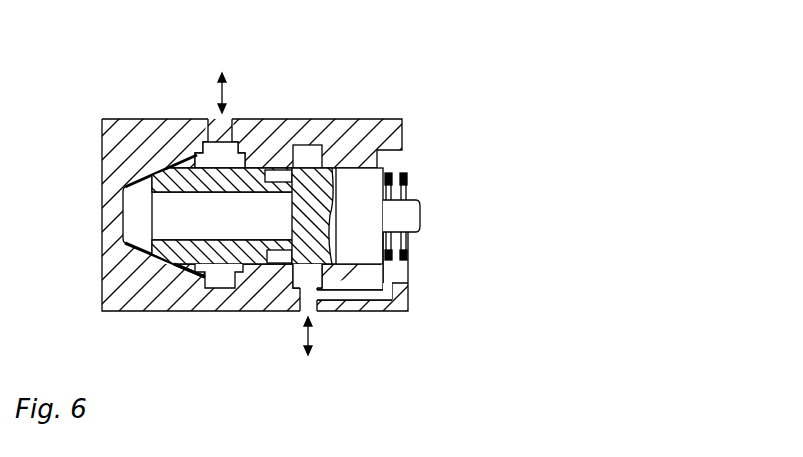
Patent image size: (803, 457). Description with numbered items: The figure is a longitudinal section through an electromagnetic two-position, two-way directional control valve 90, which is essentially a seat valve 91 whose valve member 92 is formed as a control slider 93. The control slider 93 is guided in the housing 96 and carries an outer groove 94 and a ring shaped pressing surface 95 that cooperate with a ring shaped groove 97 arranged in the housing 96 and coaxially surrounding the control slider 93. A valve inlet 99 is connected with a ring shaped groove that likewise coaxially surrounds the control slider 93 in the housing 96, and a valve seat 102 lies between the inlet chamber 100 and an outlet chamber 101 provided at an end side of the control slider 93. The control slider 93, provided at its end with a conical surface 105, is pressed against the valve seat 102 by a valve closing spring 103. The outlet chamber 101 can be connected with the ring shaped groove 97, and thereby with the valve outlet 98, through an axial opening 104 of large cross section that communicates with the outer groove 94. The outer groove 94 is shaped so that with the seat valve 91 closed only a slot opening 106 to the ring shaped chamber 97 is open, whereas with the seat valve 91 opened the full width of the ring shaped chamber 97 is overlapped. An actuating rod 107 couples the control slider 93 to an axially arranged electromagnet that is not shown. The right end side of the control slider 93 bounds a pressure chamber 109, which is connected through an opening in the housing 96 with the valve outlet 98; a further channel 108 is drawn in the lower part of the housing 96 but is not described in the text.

The electromagnetic 2/2 directional control valve 90 is at (303, 160).
The seat valve 91 is at (168, 275).
The valve member 92 is at (180, 252).
The control slider 93 is at (356, 182).
The outer groove 94 is at (268, 178).
The ring shaped pressing surface 95 is at (298, 156).
The housing 96 is at (113, 139).
The ring shaped groove 97 is at (315, 185).
The valve outlet 98 is at (307, 313).
The valve inlet 99 is at (217, 128).
The inlet chamber 100 is at (220, 150).
The outlet chamber 101 is at (132, 213).
The valve seat 102 is at (160, 170).
The valve closing spring 103 is at (398, 172).
The axial opening 104 is at (168, 243).
The conical surface 105 is at (132, 176).
The slot opening 106 is at (300, 270).
The actuating rod 107 is at (407, 218).
The channel 108 is at (340, 293).
The pressure chamber 109 is at (398, 270).